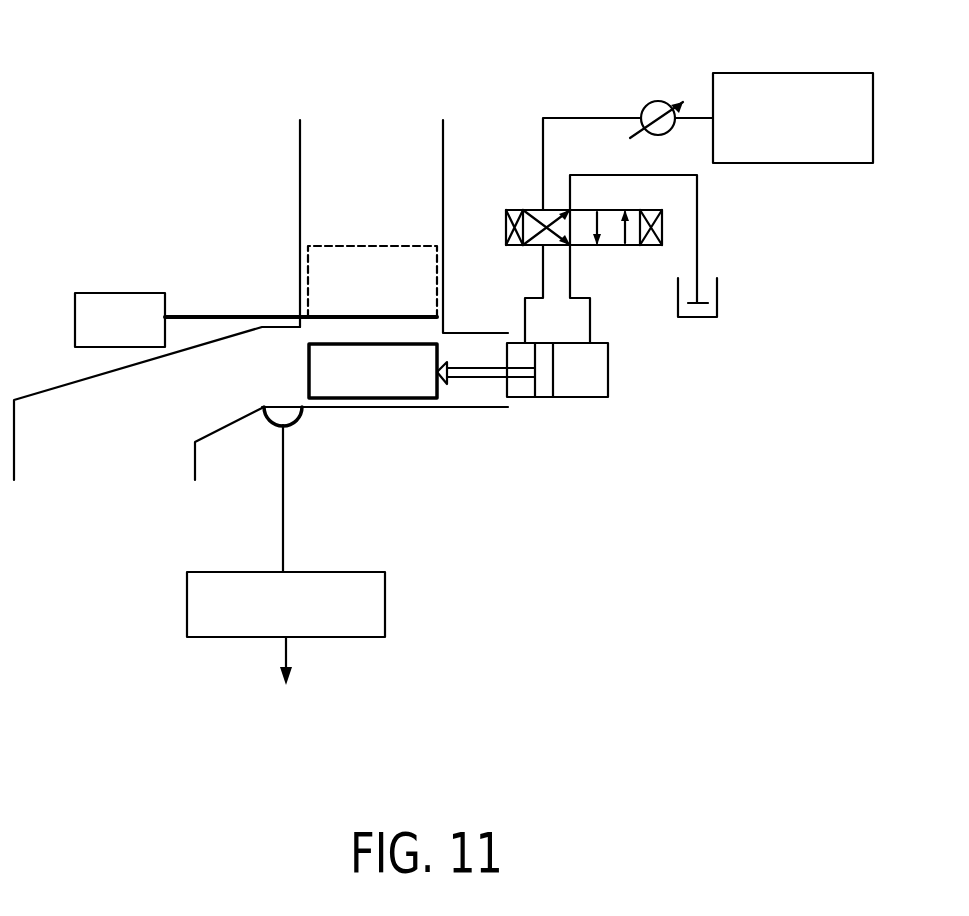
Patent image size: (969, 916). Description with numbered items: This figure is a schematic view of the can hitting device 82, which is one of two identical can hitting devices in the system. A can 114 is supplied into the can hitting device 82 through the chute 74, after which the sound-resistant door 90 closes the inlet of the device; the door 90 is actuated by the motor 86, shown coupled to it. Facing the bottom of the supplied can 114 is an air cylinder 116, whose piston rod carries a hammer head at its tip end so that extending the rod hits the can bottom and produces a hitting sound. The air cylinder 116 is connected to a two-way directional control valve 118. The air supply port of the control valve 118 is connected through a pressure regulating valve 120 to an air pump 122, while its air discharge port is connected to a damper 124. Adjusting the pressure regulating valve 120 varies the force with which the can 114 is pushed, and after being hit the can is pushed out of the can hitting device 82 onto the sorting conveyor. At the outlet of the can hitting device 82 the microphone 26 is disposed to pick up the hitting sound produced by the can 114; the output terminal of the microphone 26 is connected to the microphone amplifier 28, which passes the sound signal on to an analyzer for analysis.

The microphone 26 is at (267, 425).
The microphone amplifier 28 is at (385, 602).
The chute 74 is at (300, 143).
The can hitting device 82 is at (457, 472).
The motor 86 is at (125, 293).
The sound-resistant door 90 is at (337, 275).
The can 114 is at (358, 398).
The air cylinder 116 is at (578, 400).
The two-way directional control valve 118 is at (506, 223).
The pressure regulating valve 120 is at (650, 98).
The air pump 122 is at (807, 73).
The damper 124 is at (717, 297).